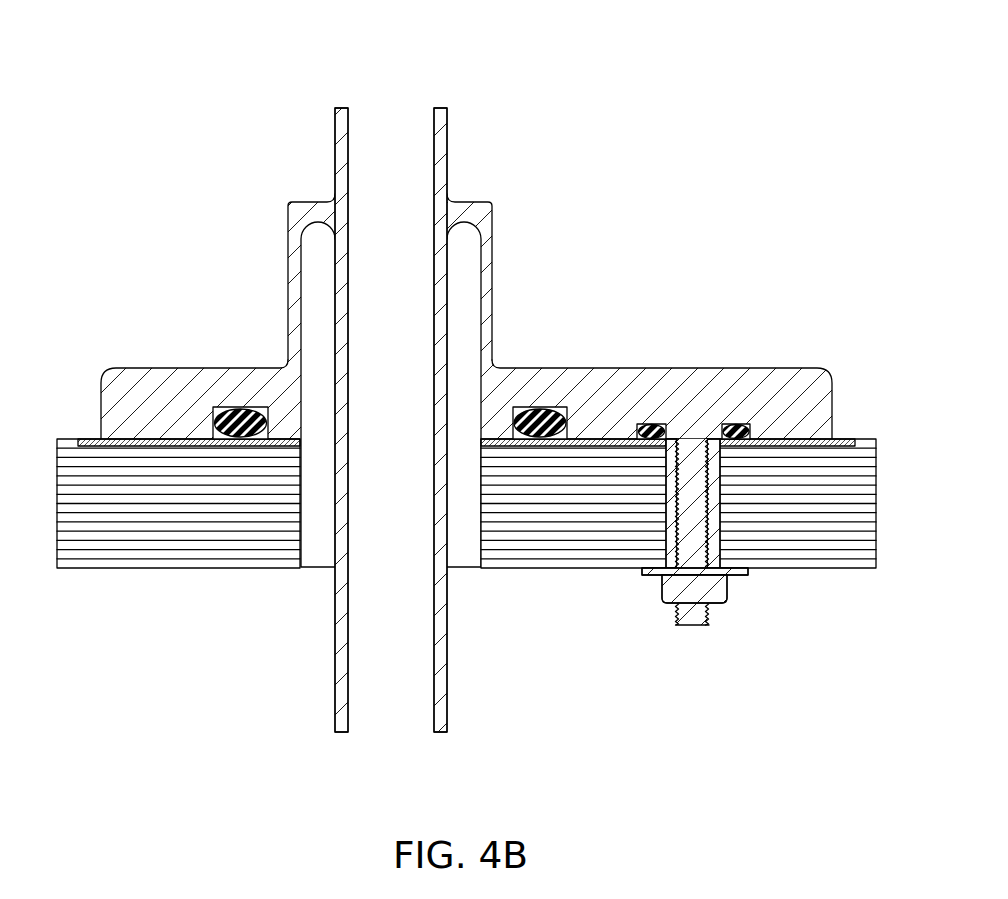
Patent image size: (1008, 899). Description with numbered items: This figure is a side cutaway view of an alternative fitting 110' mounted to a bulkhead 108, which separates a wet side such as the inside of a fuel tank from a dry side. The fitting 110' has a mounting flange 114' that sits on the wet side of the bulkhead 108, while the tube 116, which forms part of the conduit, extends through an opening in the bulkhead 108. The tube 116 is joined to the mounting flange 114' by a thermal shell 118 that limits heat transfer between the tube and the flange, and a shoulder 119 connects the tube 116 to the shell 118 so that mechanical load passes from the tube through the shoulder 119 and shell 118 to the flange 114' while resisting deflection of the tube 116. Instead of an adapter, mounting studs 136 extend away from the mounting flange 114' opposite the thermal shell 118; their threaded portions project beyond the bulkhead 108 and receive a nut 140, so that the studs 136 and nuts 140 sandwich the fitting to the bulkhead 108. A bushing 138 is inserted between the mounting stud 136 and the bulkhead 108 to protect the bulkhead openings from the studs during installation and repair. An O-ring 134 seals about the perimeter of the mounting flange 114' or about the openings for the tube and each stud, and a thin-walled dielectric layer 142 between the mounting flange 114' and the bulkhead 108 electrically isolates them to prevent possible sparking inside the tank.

The fitting 110' is at (676, 66).
The shoulder 119 is at (312, 205).
The thermal shell 118 is at (492, 300).
The mounting flange 114' is at (466, 320).
The O-ring 134 is at (242, 407).
The thin-walled dielectric layer 142 is at (90, 440).
The bulkhead 108 is at (865, 438).
The bushing 138 is at (748, 574).
The nut 140 is at (728, 598).
The mounting stud 136 is at (710, 625).
The tube 116 is at (447, 635).